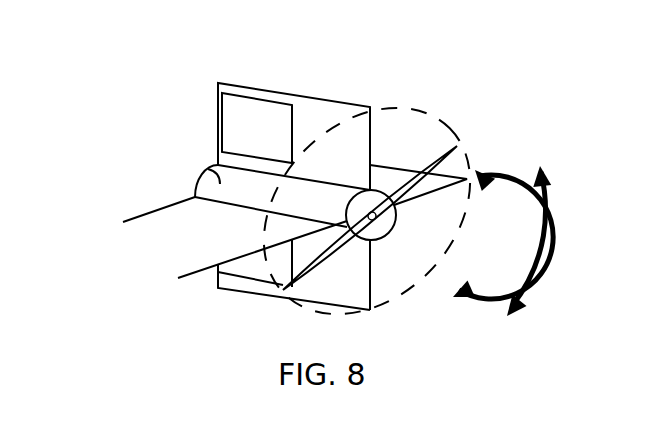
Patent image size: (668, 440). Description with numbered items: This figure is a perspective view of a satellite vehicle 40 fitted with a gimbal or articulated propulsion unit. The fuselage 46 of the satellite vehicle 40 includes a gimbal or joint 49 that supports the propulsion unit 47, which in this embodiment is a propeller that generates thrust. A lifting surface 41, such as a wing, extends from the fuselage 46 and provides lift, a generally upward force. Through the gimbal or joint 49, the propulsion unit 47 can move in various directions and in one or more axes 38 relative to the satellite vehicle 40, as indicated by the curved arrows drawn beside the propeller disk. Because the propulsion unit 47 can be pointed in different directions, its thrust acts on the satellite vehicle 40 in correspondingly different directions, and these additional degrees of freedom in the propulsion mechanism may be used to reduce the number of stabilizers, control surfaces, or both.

The satellite vehicle 40 is at (357, 71).
The fuselage 46 is at (207, 167).
The lifting surface 41 is at (190, 248).
The propulsion unit 47 is at (455, 145).
The gimbal or joint 49 is at (378, 230).
The axes 38 is at (538, 288).